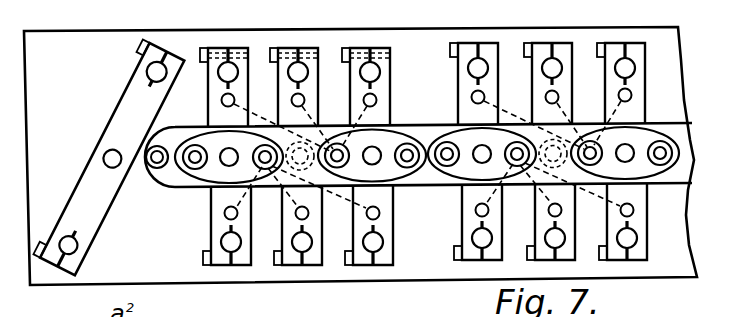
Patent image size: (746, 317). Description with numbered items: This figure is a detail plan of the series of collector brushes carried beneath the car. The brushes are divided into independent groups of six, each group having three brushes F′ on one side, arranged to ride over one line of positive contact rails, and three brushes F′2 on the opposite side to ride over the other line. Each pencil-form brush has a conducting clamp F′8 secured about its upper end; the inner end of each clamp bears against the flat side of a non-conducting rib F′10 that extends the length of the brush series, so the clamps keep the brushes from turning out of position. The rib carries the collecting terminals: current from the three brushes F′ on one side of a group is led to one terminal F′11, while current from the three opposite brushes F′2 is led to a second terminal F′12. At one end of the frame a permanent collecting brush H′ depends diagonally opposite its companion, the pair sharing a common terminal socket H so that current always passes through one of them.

The common terminal socket H is at (102, 151).
The permanent collecting brush H′ is at (147, 71).
The non-conducting rib F′10 is at (172, 180).
The collecting terminal F′12 is at (222, 171).
The collecting terminal F′11 is at (498, 154).
The collector brush F′ is at (480, 65).
The clamp F′8 is at (203, 238).
The collector brush F′2 is at (633, 238).